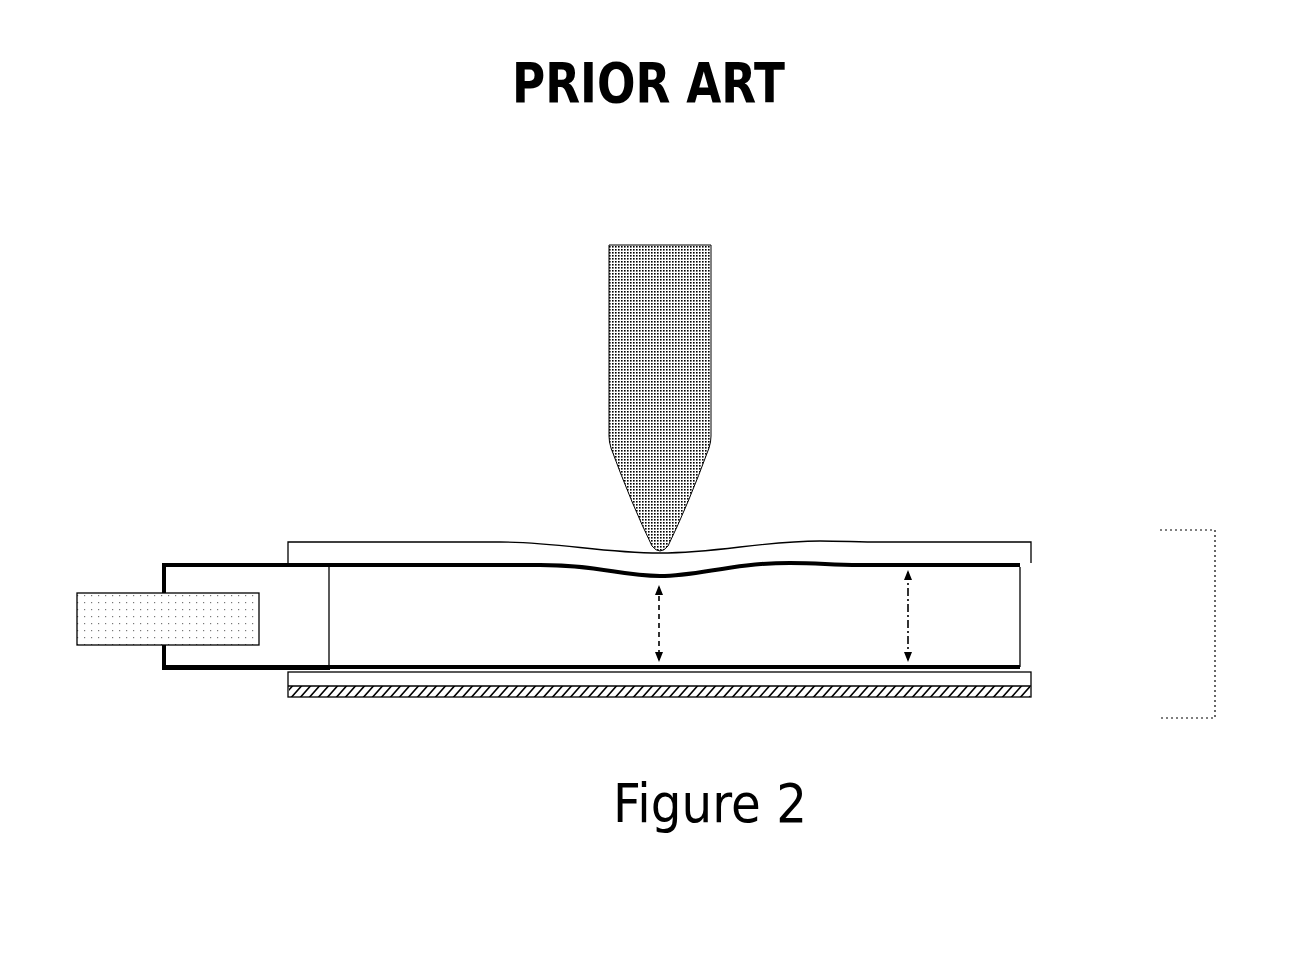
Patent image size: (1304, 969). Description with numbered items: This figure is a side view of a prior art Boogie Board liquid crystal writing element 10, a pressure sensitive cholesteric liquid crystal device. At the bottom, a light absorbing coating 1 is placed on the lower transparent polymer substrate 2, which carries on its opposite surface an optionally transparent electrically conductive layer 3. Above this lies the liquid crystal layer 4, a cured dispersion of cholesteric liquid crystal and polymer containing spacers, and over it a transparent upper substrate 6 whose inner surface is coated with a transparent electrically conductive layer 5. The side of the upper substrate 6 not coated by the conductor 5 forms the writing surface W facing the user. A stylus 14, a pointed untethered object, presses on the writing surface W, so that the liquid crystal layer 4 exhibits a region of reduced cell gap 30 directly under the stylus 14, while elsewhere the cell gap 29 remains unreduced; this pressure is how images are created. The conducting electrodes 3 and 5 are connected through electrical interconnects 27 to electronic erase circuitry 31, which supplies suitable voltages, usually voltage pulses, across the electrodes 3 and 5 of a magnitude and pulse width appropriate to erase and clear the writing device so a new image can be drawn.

The light absorbing coating 1 is at (966, 700).
The lower transparent polymer substrate 2 is at (993, 678).
The electrically conductive layer 3 is at (490, 690).
The liquid crystal layer 4 is at (497, 610).
The transparent electrically conductive layer 5 is at (993, 568).
The transparent upper substrate 6 is at (290, 548).
The cholesteric liquid crystal writing element 10 is at (1292, 640).
The stylus 14 is at (665, 335).
The electrical interconnects 27 is at (269, 565).
The unreduced cell gap 29 is at (910, 610).
The reduced cell gap 30 is at (660, 625).
The electronic erase circuitry 31 is at (133, 600).
The writing surface W is at (867, 540).